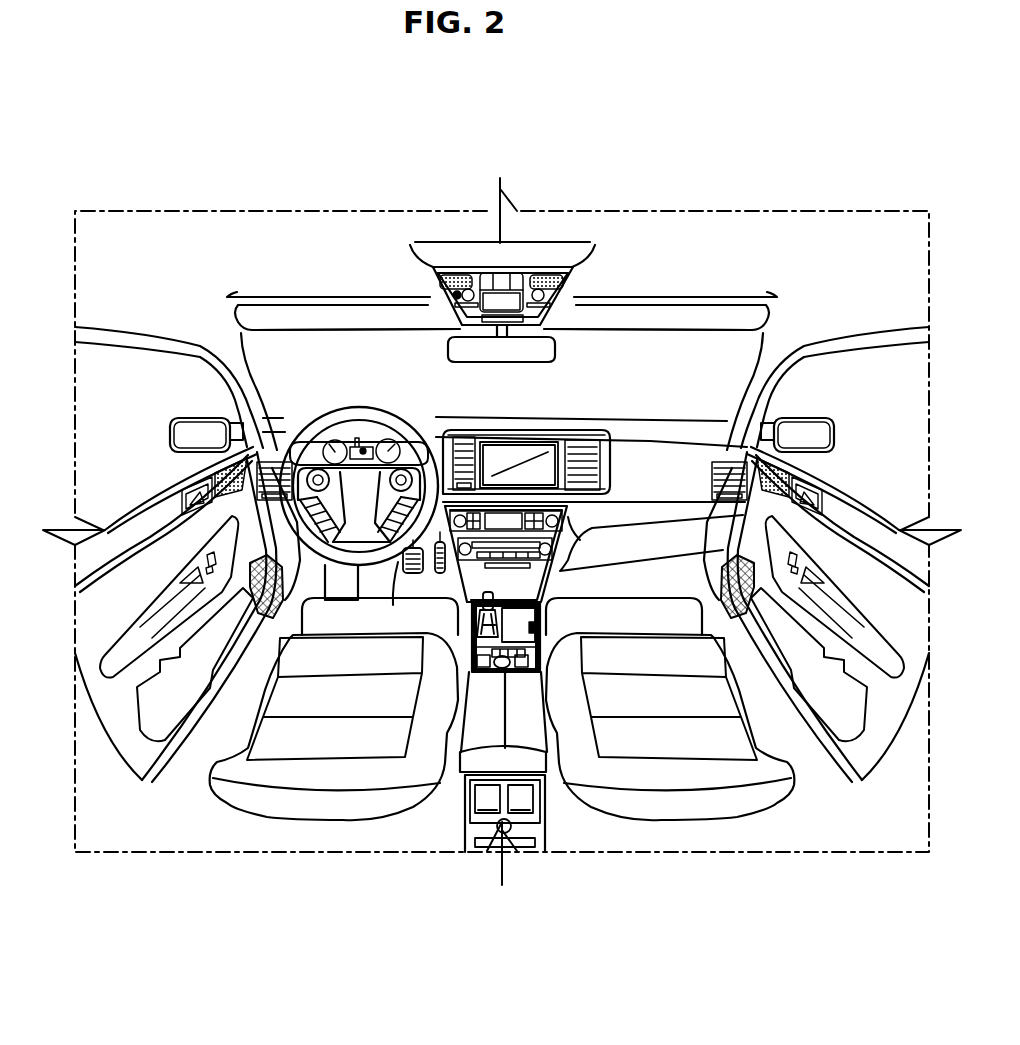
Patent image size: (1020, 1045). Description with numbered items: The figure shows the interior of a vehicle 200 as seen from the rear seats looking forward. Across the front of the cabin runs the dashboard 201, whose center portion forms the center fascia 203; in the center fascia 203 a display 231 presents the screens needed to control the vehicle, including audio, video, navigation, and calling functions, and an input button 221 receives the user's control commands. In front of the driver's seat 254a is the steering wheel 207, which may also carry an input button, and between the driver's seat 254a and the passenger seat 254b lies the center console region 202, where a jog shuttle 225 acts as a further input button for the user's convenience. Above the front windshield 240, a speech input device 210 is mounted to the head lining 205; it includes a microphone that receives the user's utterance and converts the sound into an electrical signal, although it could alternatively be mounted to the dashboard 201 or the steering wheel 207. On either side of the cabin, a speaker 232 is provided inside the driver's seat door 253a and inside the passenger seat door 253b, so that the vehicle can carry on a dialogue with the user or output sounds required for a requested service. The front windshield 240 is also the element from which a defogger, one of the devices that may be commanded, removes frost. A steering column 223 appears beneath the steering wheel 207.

The vehicle 200 is at (709, 168).
The dashboard 201 is at (657, 427).
The center console region 202 is at (542, 612).
The center fascia 203 is at (548, 433).
The head lining 205 is at (570, 253).
The steering wheel 207 is at (343, 410).
The speech input device 210 is at (428, 273).
The input button 221 is at (470, 440).
The steering column 223 is at (398, 565).
The jog shuttle 225 is at (470, 650).
The display 231 is at (515, 455).
The speaker 232 is at (290, 597).
The front windshield 240 is at (693, 358).
The driver's seat door 253a is at (134, 500).
The passenger seat door 253b is at (870, 500).
The driver's seat 254a is at (324, 810).
The passenger seat 254b is at (683, 810).